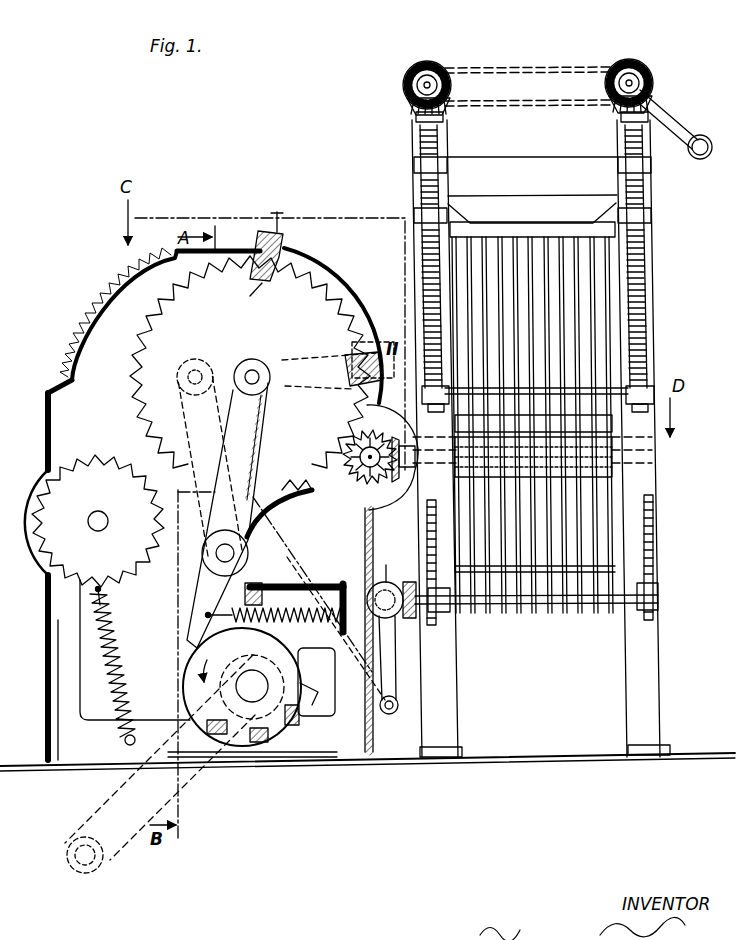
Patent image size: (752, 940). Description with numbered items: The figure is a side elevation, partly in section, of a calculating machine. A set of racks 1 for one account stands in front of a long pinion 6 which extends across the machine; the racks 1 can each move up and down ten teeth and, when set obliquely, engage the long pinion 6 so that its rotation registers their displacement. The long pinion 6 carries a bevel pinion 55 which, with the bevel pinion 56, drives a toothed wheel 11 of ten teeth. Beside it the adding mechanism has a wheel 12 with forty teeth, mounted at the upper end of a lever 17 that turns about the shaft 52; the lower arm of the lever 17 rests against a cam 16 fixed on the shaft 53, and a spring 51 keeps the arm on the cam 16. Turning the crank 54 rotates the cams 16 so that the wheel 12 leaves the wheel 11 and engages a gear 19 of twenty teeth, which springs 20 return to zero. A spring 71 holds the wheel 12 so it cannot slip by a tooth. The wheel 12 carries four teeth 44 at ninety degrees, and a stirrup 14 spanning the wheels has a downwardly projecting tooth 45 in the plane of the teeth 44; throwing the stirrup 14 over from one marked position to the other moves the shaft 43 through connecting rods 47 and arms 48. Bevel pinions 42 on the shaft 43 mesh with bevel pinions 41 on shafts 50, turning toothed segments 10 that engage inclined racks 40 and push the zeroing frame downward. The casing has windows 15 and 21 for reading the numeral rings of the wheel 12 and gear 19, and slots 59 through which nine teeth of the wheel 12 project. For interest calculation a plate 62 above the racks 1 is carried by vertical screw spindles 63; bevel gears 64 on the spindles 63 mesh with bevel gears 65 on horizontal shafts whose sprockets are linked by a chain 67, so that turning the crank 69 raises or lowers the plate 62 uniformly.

The rack 1 is at (495, 596).
The long pinion 6 is at (656, 458).
The toothed segment 10 is at (660, 572).
The toothed wheel 11 is at (355, 470).
The wheel 12 is at (250, 362).
The stirrup 14 is at (283, 237).
The window 15 is at (222, 252).
The cam 16 is at (268, 748).
The lever 17 is at (268, 513).
The gear 19 is at (84, 462).
The spring 20 is at (120, 640).
The window 21 is at (56, 392).
The inclined rack 40 is at (655, 524).
The bevel pinion 41 is at (410, 618).
The bevel pinion 42 is at (387, 582).
The shaft 43 is at (389, 556).
The tooth 44 is at (255, 284).
The downwardly projecting tooth 45 is at (300, 250).
The connecting rod 47 is at (302, 545).
The arm 48 is at (399, 665).
The shaft 50 is at (555, 596).
The spring 51 is at (300, 622).
The shaft 52 is at (236, 554).
The shaft 53 is at (260, 684).
The crank 54 is at (128, 845).
The bevel pinion 55 is at (403, 490).
The bevel pinion 56 is at (365, 482).
The slot 59 is at (112, 298).
The plate 62 is at (545, 222).
The screw spindle 63 is at (420, 283).
The bevel gear 64 is at (410, 112).
The bevel gear 65 is at (424, 60).
The chain 67 is at (528, 66).
The crank 69 is at (682, 120).
The spring 71 is at (302, 490).